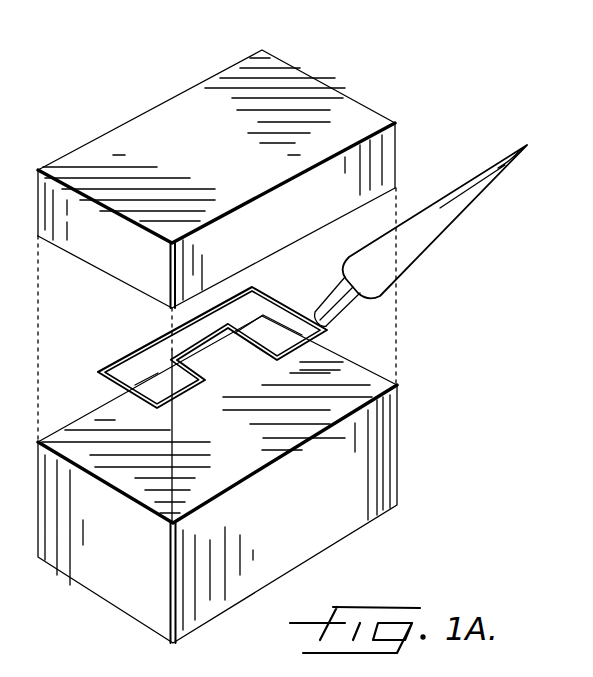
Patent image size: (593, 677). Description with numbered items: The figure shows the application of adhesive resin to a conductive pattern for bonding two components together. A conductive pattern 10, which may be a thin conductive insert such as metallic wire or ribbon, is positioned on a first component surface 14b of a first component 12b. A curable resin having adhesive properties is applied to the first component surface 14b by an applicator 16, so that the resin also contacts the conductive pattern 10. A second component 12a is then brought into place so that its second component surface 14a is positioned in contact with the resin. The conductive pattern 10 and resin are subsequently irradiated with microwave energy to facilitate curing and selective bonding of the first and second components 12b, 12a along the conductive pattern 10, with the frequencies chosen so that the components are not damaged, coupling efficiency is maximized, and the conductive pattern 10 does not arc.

The conductive pattern 10 is at (312, 341).
The second component 12a is at (340, 90).
The first component 12b is at (400, 441).
The second component surface 14a is at (112, 277).
The first component surface 14b is at (378, 381).
The applicator 16 is at (452, 227).